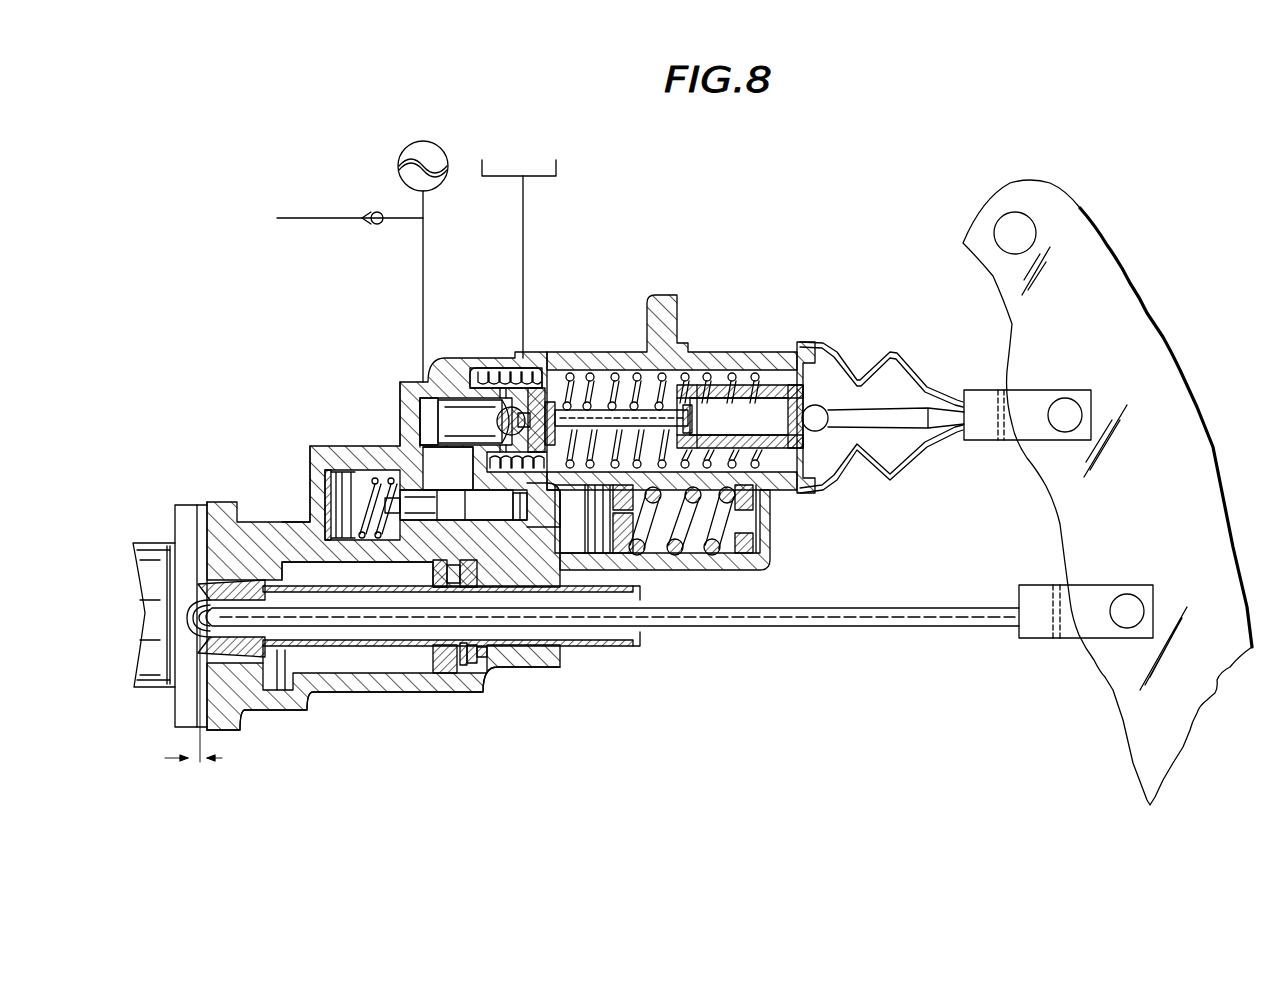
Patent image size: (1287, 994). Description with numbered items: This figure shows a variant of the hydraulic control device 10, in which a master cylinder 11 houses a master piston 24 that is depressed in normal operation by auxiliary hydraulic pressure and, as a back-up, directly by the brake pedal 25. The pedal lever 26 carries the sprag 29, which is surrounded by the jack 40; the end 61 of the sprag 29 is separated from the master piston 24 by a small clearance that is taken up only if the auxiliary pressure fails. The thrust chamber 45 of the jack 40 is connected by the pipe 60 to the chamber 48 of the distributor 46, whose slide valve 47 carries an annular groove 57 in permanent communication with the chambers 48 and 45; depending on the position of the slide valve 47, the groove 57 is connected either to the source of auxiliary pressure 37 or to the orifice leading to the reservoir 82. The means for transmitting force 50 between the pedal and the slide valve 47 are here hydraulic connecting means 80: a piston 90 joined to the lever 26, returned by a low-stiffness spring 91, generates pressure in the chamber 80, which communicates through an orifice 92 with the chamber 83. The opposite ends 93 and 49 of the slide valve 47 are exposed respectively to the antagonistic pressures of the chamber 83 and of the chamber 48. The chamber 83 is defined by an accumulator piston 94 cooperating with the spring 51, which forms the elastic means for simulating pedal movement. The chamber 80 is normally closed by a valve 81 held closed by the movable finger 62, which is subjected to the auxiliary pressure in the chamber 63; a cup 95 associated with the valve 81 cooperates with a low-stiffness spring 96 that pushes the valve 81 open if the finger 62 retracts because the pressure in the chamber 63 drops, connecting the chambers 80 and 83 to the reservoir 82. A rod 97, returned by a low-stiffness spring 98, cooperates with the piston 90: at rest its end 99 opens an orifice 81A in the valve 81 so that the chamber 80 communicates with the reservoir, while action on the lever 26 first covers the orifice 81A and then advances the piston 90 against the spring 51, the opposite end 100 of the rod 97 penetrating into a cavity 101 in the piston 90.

The hydraulic control device 10 is at (787, 288).
The master cylinder 11 is at (152, 512).
The master piston 24 is at (245, 585).
The brake pedal 25 is at (1212, 704).
The pedal lever 26 is at (1102, 242).
The sprag 29 is at (845, 628).
The hydraulic accumulator 37 is at (421, 141).
The jack 40 is at (432, 673).
The thrust chamber 45 is at (467, 665).
The distributor 46 is at (410, 484).
The slide valve 47 is at (483, 520).
The chamber of the distributor 48 is at (338, 480).
The end of the slide valve 49 is at (380, 515).
The means for transmitting force 50 is at (1165, 328).
The spring accumulator 51 is at (697, 550).
The annular groove 57 is at (470, 470).
The pipe 60 is at (428, 556).
The end of the sprag 61 is at (210, 600).
The movable finger 62 is at (428, 408).
The chamber 63 is at (462, 413).
The hydraulic connecting means 80 is at (603, 374).
The valve 81 is at (503, 368).
The orifice 81A is at (476, 448).
The reservoir 82 is at (556, 176).
The chamber 83 is at (553, 527).
The piston 90 is at (745, 394).
The spring 91 is at (718, 388).
The orifice 92 is at (573, 486).
The end of the slide valve 93 is at (515, 520).
The accumulator piston 94 is at (553, 548).
The cup 95 is at (472, 376).
The spring 96 is at (493, 374).
The rod 97 is at (580, 410).
The spring 98 is at (622, 400).
The end of the rod 99 is at (550, 402).
The end of the rod 100 is at (697, 385).
The cavity 101 is at (760, 412).